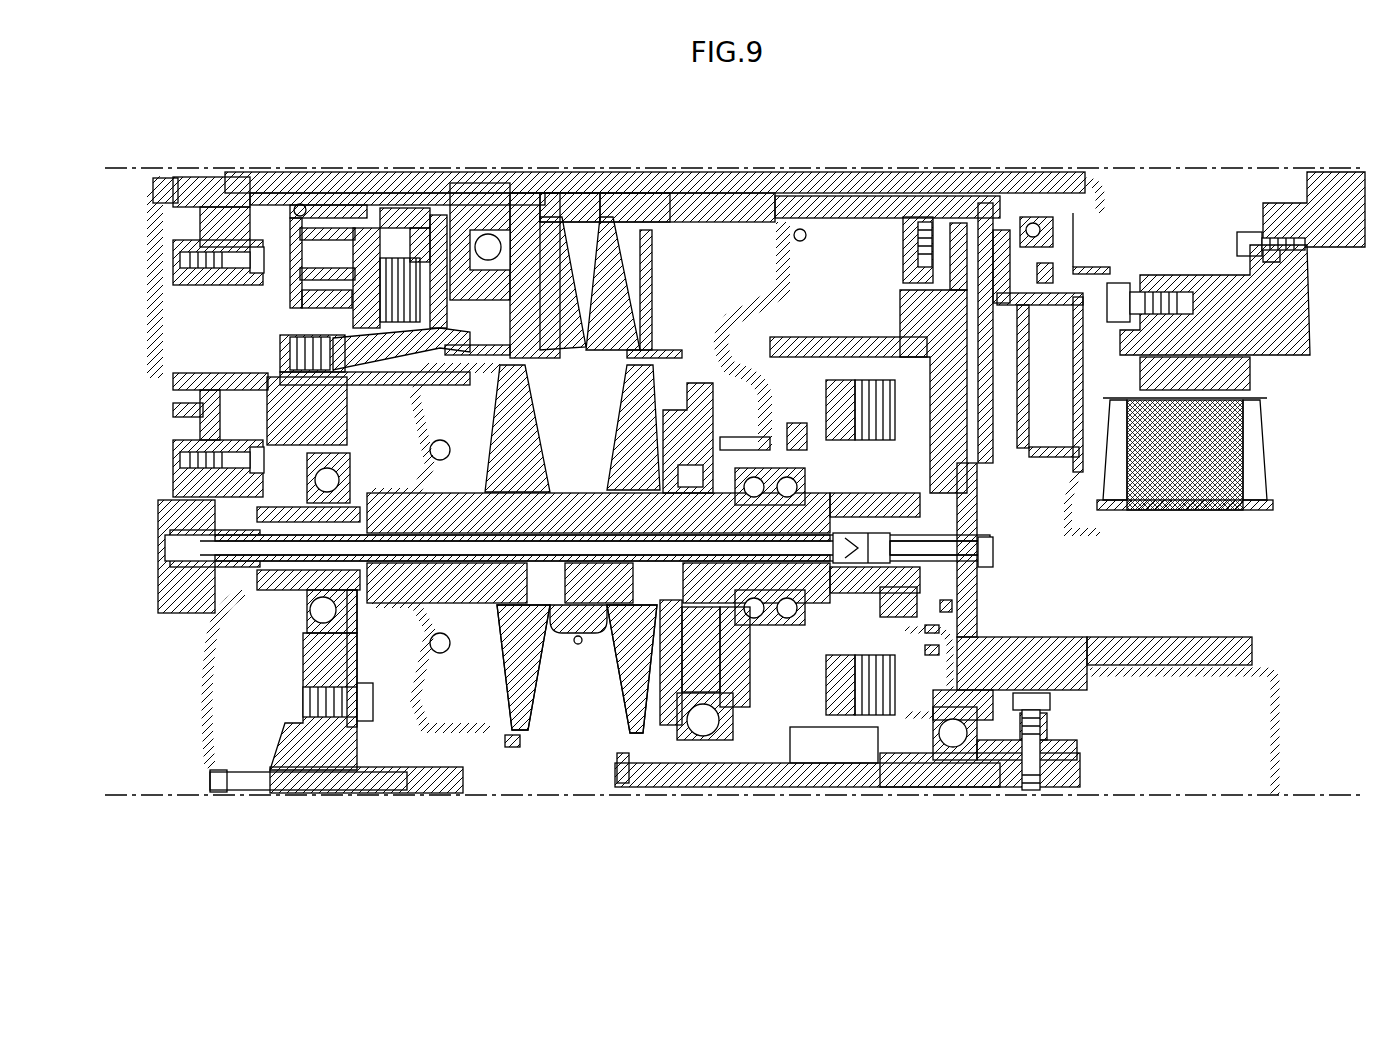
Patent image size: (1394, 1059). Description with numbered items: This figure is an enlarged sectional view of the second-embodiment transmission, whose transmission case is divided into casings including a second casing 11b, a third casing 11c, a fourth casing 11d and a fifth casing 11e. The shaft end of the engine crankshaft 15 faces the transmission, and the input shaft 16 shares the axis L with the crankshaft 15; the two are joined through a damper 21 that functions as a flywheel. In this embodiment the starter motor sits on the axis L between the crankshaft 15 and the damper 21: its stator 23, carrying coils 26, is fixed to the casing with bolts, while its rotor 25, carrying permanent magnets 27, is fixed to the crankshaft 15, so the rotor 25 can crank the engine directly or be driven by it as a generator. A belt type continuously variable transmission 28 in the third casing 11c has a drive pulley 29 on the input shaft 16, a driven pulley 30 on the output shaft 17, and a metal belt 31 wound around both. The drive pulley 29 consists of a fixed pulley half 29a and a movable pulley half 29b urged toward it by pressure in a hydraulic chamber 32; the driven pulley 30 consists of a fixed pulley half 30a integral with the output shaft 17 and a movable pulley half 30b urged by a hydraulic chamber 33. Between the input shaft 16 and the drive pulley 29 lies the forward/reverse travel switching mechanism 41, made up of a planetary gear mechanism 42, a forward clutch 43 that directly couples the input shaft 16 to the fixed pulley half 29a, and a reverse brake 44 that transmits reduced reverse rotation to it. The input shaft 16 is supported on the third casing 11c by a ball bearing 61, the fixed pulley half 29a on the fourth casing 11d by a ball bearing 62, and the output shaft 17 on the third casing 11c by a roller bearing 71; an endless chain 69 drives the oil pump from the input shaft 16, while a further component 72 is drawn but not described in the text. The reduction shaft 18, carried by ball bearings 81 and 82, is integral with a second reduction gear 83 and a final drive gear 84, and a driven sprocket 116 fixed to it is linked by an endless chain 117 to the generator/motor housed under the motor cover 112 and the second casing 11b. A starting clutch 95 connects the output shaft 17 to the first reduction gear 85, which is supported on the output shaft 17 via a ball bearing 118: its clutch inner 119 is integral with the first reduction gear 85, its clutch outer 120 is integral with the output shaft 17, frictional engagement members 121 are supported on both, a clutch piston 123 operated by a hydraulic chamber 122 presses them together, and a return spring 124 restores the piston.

The axis L is at (1232, 168).
The second casing 11b is at (1075, 650).
The third casing 11c is at (668, 722).
The fourth casing 11d is at (307, 727).
The fifth casing 11e is at (205, 700).
The crankshaft 15 is at (1340, 250).
The input shaft 16 is at (803, 170).
The output shaft 17 is at (528, 596).
The reduction shaft 18 is at (860, 770).
The damper 21 is at (1068, 549).
The stator 23 is at (1275, 443).
The rotor 25 is at (1250, 312).
The coils 26 is at (1270, 470).
The permanent magnets 27 is at (1255, 378).
The belt type continuously variable transmission 28 is at (513, 748).
The drive pulley 29 is at (639, 120).
The fixed pulley half 29a is at (545, 220).
The movable pulley half 29b is at (602, 220).
The driven pulley 30 is at (612, 858).
The fixed pulley half 30a is at (617, 668).
The movable pulley half 30b is at (530, 735).
The metal belt 31 is at (575, 648).
The hydraulic chamber 32 is at (682, 318).
The hydraulic chamber 33 is at (478, 442).
The forward/reverse travel switching mechanism 41 is at (262, 314).
The planetary gear mechanism 42 is at (290, 276).
The forward clutch 43 is at (458, 314).
The reverse brake 44 is at (276, 352).
The ball bearing 61 is at (812, 240).
The ball bearing 62 is at (486, 232).
The endless chain 69 is at (922, 265).
The roller bearing 71 is at (687, 443).
The bearing 72 is at (285, 422).
The ball bearing 81 is at (955, 747).
The ball bearing 82 is at (703, 722).
The second reduction gear 83 is at (753, 698).
The final drive gear 84 is at (812, 737).
The first reduction gear 85 is at (750, 437).
The starting clutch 95 is at (830, 377).
The motor cover 112 is at (1275, 705).
The driven sprocket 116 is at (1060, 742).
The endless chain 117 is at (1050, 703).
The ball bearing 118 is at (727, 587).
The clutch inner 119 is at (795, 422).
The clutch outer 120 is at (893, 712).
The frictional engagement members 121 is at (867, 380).
The hydraulic chamber 122 is at (939, 630).
The clutch piston 123 is at (939, 652).
The return spring 124 is at (952, 610).